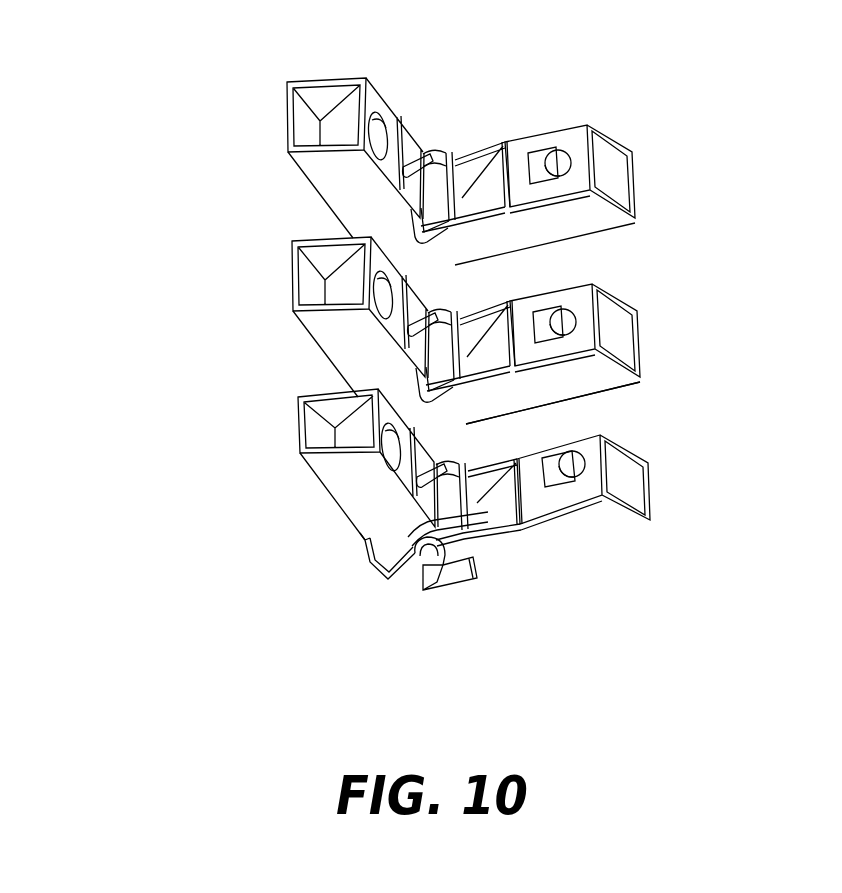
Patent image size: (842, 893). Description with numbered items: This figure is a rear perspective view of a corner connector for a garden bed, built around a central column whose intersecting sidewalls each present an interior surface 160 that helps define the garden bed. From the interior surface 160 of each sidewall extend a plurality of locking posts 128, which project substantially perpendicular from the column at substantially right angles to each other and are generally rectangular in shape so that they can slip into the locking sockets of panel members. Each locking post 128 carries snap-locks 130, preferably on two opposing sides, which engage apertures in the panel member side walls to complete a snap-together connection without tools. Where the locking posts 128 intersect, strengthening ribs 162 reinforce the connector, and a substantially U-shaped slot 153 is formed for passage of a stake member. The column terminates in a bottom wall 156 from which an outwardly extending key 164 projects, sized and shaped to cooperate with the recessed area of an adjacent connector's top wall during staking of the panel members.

The locking posts 128 is at (285, 125).
The snap-locks 130 is at (382, 128).
The strengthening ribs 162 is at (455, 277).
The U-shaped slot 153 is at (440, 374).
The interior surface 160 is at (458, 450).
The key 164 is at (367, 560).
The bottom wall 156 is at (417, 570).